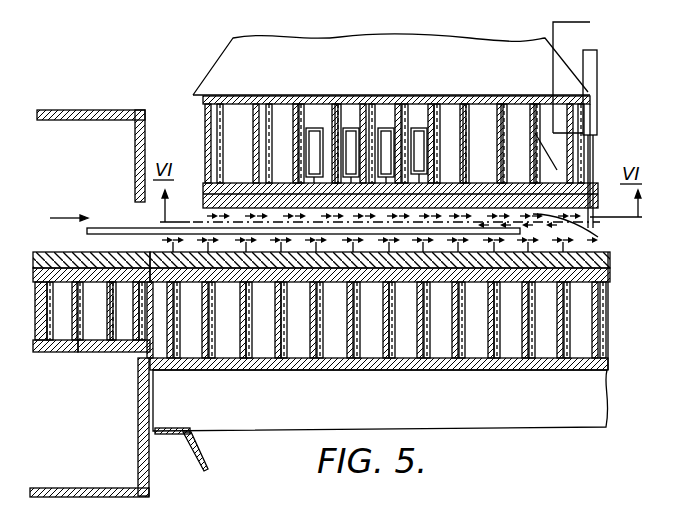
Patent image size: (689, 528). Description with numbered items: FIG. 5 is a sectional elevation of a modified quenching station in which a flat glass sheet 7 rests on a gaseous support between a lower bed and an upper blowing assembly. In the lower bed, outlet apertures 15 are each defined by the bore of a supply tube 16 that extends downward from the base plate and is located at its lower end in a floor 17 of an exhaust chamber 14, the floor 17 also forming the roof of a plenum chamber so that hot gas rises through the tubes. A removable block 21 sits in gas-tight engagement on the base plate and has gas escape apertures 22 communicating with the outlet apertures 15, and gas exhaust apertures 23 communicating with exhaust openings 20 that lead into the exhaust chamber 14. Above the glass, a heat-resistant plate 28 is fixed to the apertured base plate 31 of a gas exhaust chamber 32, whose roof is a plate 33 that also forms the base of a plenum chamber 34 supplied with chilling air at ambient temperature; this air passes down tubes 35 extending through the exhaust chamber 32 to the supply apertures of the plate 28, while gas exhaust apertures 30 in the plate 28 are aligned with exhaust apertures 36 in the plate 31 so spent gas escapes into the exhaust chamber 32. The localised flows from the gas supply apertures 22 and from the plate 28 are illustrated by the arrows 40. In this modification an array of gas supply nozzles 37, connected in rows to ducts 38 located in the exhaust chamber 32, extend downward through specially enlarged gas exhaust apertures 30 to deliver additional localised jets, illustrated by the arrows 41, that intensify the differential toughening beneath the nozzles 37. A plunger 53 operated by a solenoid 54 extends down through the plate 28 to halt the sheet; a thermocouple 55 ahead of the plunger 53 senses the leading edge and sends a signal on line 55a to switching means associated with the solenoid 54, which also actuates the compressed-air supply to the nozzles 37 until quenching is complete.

The glass sheet 7 is at (102, 224).
The exhaust chamber 14 is at (62, 352).
The outlet apertures 15 is at (37, 252).
The supply tube 16 is at (38, 336).
The floor 17 is at (93, 352).
The exhaust openings 20 is at (65, 287).
The removable block 21 is at (46, 266).
The gas escape apertures 22 is at (107, 253).
The gas exhaust apertures 23 is at (85, 258).
The plate 28 is at (205, 187).
The gas exhaust apertures 30 is at (470, 175).
The apertured base plate 31 is at (590, 184).
The gas exhaust chamber 32 is at (557, 133).
The plate 33 is at (311, 128).
The plenum chamber 34 is at (227, 56).
The tubes 35 is at (578, 110).
The exhaust apertures 36 is at (580, 160).
The gas supply nozzles 37 is at (280, 184).
The ducts 38 is at (383, 120).
The arrows 40 is at (602, 253).
The arrows 41 is at (440, 278).
The plunger 53 is at (598, 237).
The solenoid 54 is at (597, 61).
The thermocouple 55 is at (535, 133).
The line 55a is at (590, 32).